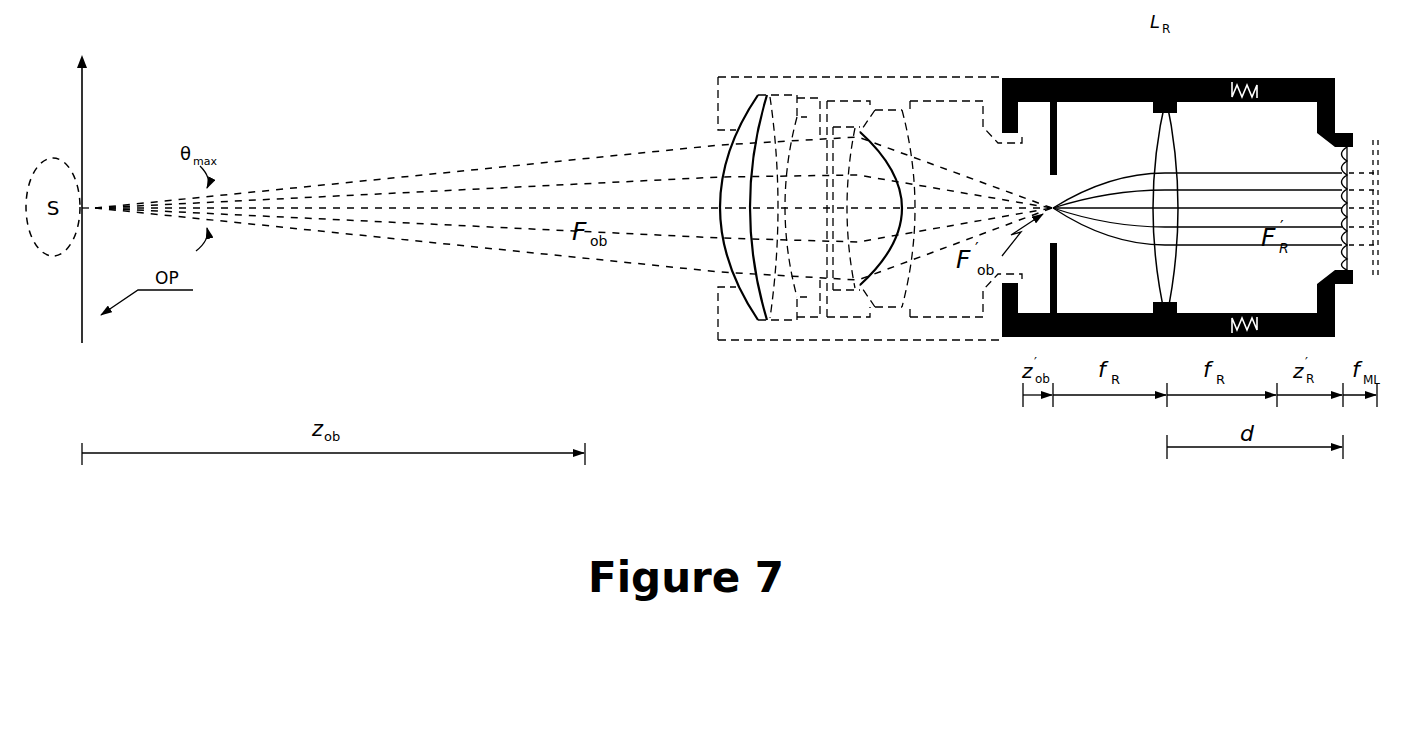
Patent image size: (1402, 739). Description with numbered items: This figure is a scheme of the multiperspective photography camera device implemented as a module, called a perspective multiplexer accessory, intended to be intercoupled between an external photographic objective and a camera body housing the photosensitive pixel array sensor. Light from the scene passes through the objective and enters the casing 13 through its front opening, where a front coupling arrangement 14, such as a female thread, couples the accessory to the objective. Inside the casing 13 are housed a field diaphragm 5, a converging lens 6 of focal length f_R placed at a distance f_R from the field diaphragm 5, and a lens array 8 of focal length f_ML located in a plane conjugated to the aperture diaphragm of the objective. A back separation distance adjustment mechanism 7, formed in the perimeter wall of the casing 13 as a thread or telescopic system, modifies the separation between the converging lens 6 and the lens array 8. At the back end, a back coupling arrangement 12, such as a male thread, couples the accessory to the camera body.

The field diaphragm 5 is at (1050, 182).
The converging lens 6 is at (1164, 186).
The back separation distance adjustment mechanism 7 is at (1242, 192).
The lens array 8 is at (1327, 209).
The back coupling arrangement 12 is at (1356, 196).
The casing 13 is at (1177, 194).
The front coupling arrangement 14 is at (1024, 122).